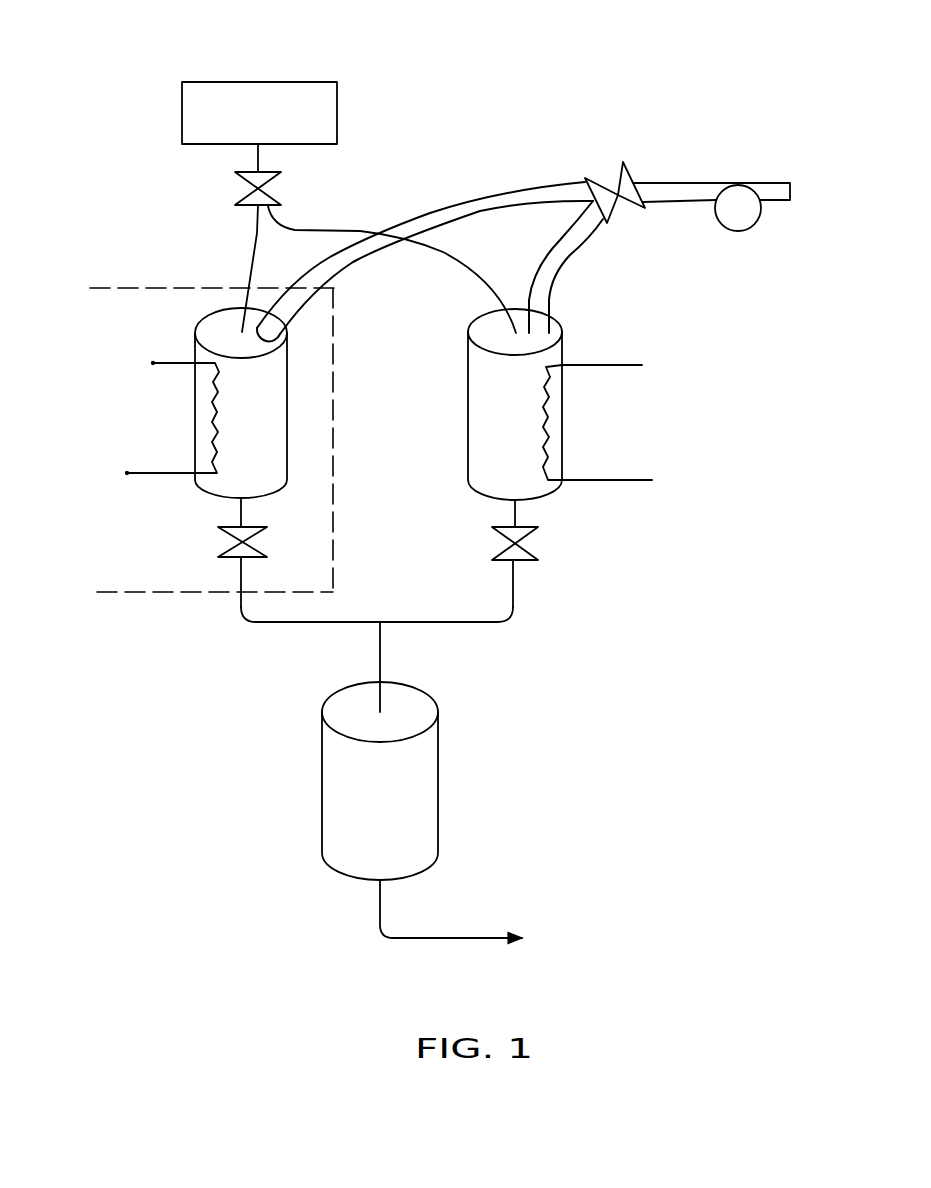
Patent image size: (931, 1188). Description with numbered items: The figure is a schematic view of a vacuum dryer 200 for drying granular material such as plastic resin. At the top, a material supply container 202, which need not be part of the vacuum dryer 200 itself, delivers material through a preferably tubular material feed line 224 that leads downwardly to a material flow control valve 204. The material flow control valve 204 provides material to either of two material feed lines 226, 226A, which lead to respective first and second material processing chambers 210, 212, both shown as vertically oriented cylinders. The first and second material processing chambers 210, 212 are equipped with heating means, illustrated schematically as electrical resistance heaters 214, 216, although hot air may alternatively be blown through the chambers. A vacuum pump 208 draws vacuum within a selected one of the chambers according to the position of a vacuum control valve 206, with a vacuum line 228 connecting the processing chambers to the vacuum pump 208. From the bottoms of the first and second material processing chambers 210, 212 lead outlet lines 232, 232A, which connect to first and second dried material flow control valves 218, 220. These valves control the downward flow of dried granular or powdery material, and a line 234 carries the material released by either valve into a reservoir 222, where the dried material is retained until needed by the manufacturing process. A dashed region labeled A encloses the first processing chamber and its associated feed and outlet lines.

The vacuum dryer 200 is at (535, 592).
The material supply container 202 is at (293, 103).
The material flow control valve 204 is at (230, 188).
The vacuum control valve 206 is at (600, 168).
The vacuum pump 208 is at (739, 209).
The first material processing chamber 210 is at (205, 493).
The second material processing chamber 212 is at (565, 440).
The electrical resistance heater 214 is at (216, 424).
The electrical resistance heater 216 is at (551, 388).
The first dried material flow control valve 218 is at (218, 546).
The second dried material flow control valve 220 is at (535, 542).
The reservoir 222 is at (423, 810).
The material feed line 224 is at (262, 157).
The material feed line 226 is at (246, 301).
The material feed line 226A is at (443, 256).
The vacuum line 228 is at (478, 194).
The outlet line 232 is at (243, 510).
The outlet line 232A is at (517, 510).
The line 234 is at (458, 624).
The subsystem region A is at (133, 592).